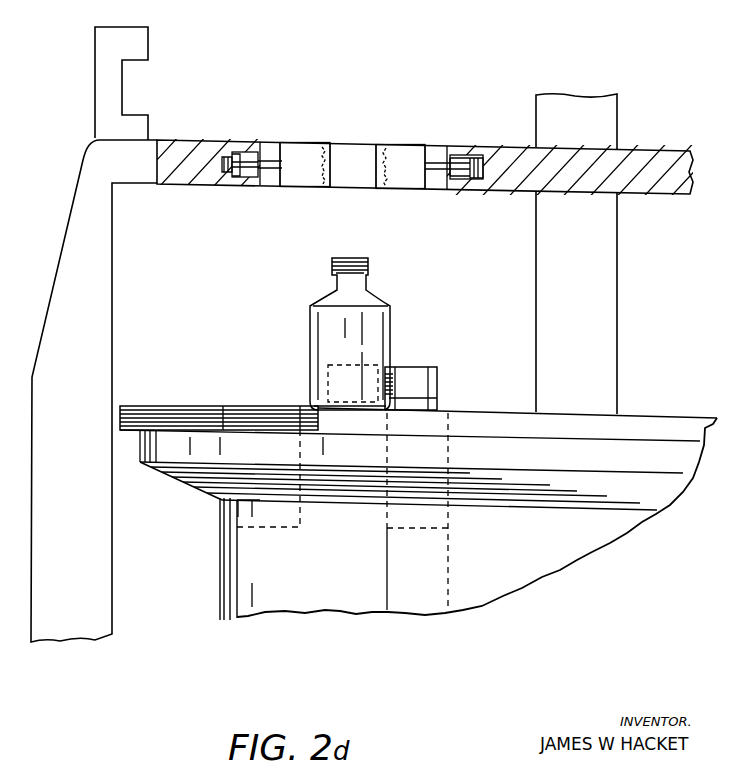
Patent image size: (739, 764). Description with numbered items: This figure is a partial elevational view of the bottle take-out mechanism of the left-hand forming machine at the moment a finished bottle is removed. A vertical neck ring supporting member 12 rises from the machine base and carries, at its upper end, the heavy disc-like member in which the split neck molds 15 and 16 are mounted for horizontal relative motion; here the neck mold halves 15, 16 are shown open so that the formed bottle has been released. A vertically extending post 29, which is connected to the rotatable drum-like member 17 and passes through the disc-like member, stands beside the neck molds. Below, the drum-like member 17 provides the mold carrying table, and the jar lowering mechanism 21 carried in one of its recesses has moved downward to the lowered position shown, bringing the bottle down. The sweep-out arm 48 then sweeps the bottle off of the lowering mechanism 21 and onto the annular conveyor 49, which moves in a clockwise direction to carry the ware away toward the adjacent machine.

The neck ring supporting member 12 is at (86, 388).
The split neck mold 15 is at (403, 152).
The split neck mold 16 is at (296, 152).
The drum-like member 17 is at (238, 588).
The jar lowering mechanism 21 is at (300, 406).
The post 29 is at (565, 104).
The sweep-out arm 48 is at (410, 370).
The annular conveyor 49 is at (178, 416).